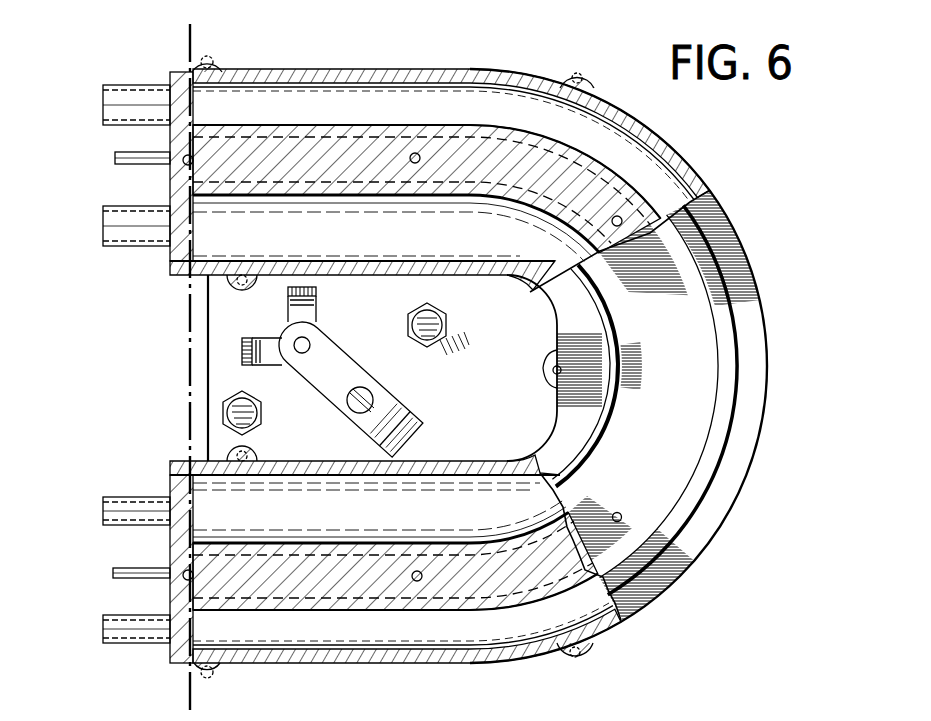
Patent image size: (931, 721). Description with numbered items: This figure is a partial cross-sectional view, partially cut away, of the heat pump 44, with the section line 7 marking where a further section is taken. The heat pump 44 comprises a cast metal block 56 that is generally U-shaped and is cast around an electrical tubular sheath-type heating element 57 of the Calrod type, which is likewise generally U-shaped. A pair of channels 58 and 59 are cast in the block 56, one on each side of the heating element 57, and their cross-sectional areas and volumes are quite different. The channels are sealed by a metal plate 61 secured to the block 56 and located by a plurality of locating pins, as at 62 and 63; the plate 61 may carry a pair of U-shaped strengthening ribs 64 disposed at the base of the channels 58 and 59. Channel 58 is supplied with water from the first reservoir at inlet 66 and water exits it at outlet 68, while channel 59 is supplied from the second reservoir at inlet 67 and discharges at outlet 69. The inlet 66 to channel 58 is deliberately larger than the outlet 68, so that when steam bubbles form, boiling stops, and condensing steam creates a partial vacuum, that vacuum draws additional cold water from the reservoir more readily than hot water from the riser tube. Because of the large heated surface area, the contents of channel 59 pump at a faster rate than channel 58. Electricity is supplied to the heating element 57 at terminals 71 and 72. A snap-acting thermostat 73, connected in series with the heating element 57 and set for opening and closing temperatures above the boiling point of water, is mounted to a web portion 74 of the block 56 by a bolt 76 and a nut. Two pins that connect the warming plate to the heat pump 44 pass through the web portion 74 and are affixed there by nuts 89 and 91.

The section line 7- 7 is at (212, 36).
The heat pump 44 is at (716, 552).
The cast metal block 56 is at (478, 70).
The heating element 57 is at (462, 130).
The channel 58 is at (417, 115).
The channel 59 is at (284, 240).
The metal plate 61 is at (752, 330).
The locating pin 62 is at (546, 381).
The locating pin 63 is at (622, 512).
The U-shaped strengthening ribs 64 is at (716, 307).
The inlet 66 is at (120, 100).
The inlet 67 is at (120, 222).
The outlet 68 is at (125, 628).
The outlet 69 is at (110, 512).
The terminal 71 is at (115, 157).
The terminal 72 is at (113, 576).
The thermostat 73 is at (327, 409).
The web portion 74 is at (379, 322).
The bolt 76 is at (368, 395).
The nut 89 is at (257, 406).
The nut 91 is at (447, 325).